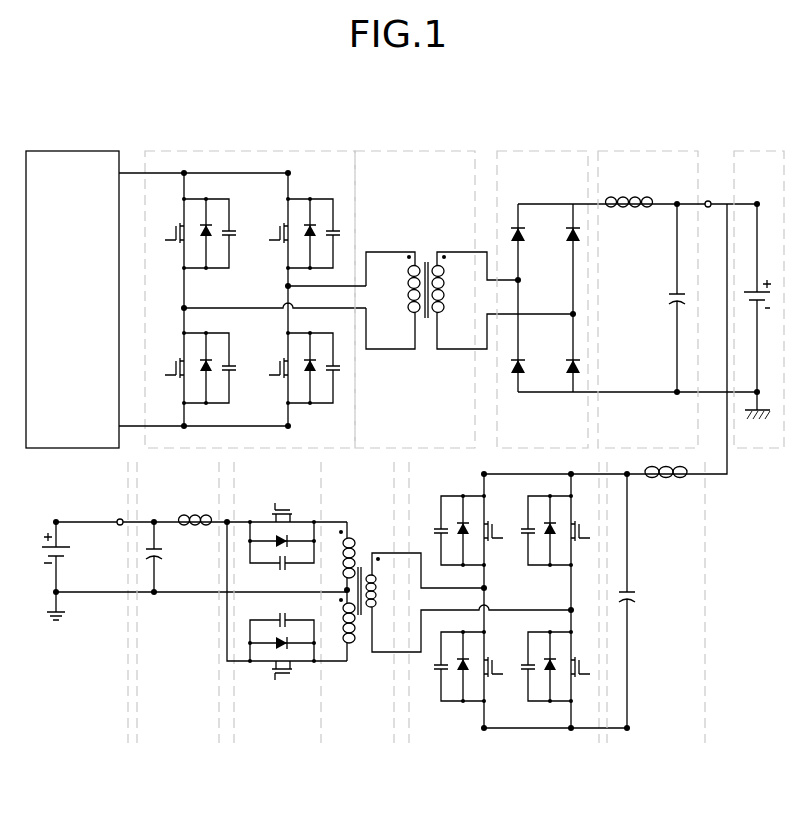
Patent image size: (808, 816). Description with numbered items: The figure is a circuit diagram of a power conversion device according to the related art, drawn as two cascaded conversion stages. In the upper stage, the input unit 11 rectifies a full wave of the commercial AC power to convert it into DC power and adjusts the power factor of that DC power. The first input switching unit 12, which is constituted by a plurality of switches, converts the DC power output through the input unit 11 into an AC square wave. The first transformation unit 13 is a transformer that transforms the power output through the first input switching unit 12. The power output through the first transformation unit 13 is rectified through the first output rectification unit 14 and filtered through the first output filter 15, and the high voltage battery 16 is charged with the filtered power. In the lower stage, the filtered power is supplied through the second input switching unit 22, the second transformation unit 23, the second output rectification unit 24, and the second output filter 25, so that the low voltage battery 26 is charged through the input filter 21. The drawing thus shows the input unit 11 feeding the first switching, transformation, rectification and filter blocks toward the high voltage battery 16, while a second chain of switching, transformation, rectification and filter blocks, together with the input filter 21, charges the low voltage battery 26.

The input unit 11 is at (66, 150).
The first input switching unit 12 is at (247, 150).
The first transformation unit 13 is at (416, 150).
The first output rectification unit 14 is at (541, 150).
The first output filter 15 is at (647, 150).
The high voltage battery 16 is at (757, 150).
The input filter 21 is at (646, 746).
The second input switching unit 22 is at (482, 746).
The second transformation unit 23 is at (366, 746).
The second output rectification unit 24 is at (272, 746).
The second output filter 25 is at (174, 746).
The low voltage battery 26 is at (79, 746).